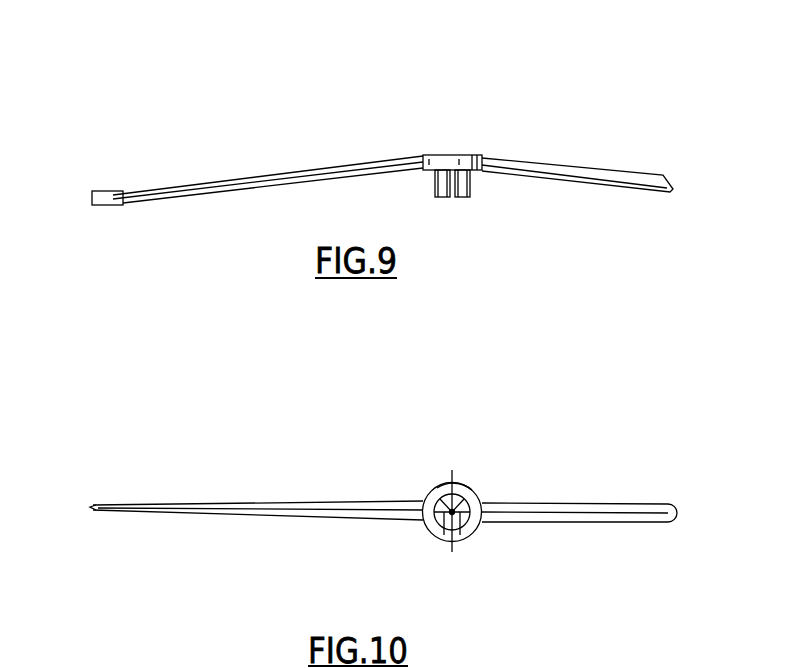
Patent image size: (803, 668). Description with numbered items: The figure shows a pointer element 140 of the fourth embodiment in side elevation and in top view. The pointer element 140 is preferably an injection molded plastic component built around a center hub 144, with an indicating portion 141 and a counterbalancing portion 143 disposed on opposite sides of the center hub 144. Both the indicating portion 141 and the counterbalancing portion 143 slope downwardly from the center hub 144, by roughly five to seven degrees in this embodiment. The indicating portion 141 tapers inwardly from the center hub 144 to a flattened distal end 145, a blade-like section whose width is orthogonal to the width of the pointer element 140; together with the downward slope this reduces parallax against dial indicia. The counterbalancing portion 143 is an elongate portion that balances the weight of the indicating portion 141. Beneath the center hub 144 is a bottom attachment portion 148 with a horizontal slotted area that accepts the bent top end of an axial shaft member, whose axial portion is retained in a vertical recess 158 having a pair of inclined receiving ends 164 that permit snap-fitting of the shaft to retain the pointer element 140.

In FIG. 9, the pointer element 140 is at (173, 126).
In FIG. 10, the pointer element 140 is at (266, 552).
In FIG. 9, the indicating portion 141 is at (270, 175).
In FIG. 10, the indicating portion 141 is at (305, 503).
In FIG. 9, the counterbalancing portion 143 is at (593, 167).
In FIG. 10, the counterbalancing portion 143 is at (598, 503).
In FIG. 9, the center hub 144 is at (428, 155).
In FIG. 10, the center hub 144 is at (475, 532).
In FIG. 9, the flattened distal end 145 is at (97, 206).
In FIG. 10, the flattened distal end 145 is at (112, 512).
In FIG. 9, the bottom attachment portion 148 is at (473, 187).
In FIG. 10, the vertical recess 158 is at (453, 480).
In FIG. 10, the inclined receiving ends 164 is at (437, 488).